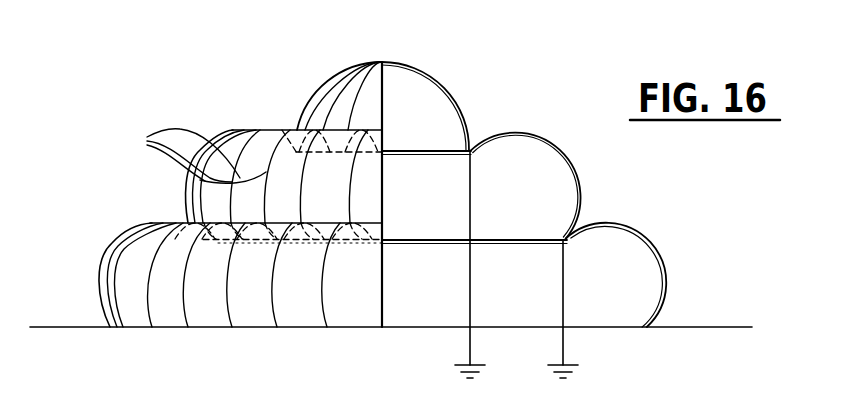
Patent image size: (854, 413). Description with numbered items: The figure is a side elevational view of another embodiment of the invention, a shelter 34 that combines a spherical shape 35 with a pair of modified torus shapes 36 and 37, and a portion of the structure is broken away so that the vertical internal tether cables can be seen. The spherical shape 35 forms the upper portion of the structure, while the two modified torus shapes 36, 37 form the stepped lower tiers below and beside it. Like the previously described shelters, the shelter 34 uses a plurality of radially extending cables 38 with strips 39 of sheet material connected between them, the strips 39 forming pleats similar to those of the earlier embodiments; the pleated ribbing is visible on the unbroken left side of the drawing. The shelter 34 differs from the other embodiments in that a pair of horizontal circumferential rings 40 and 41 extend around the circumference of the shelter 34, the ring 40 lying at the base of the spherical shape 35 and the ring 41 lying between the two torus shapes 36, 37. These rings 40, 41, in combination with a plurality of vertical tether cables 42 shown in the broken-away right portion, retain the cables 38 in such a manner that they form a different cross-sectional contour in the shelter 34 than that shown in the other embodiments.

The shelter 34 is at (320, 88).
The spherical shape 35 is at (421, 70).
The modified torus shape 36 is at (518, 132).
The modified torus shape 37 is at (662, 261).
The radially extending cables 38 is at (192, 156).
The strips of sheet material 39 is at (248, 297).
The horizontal circumferential ring 40 is at (418, 151).
The horizontal circumferential ring 41 is at (493, 240).
The vertical tether cables 42 is at (470, 305).